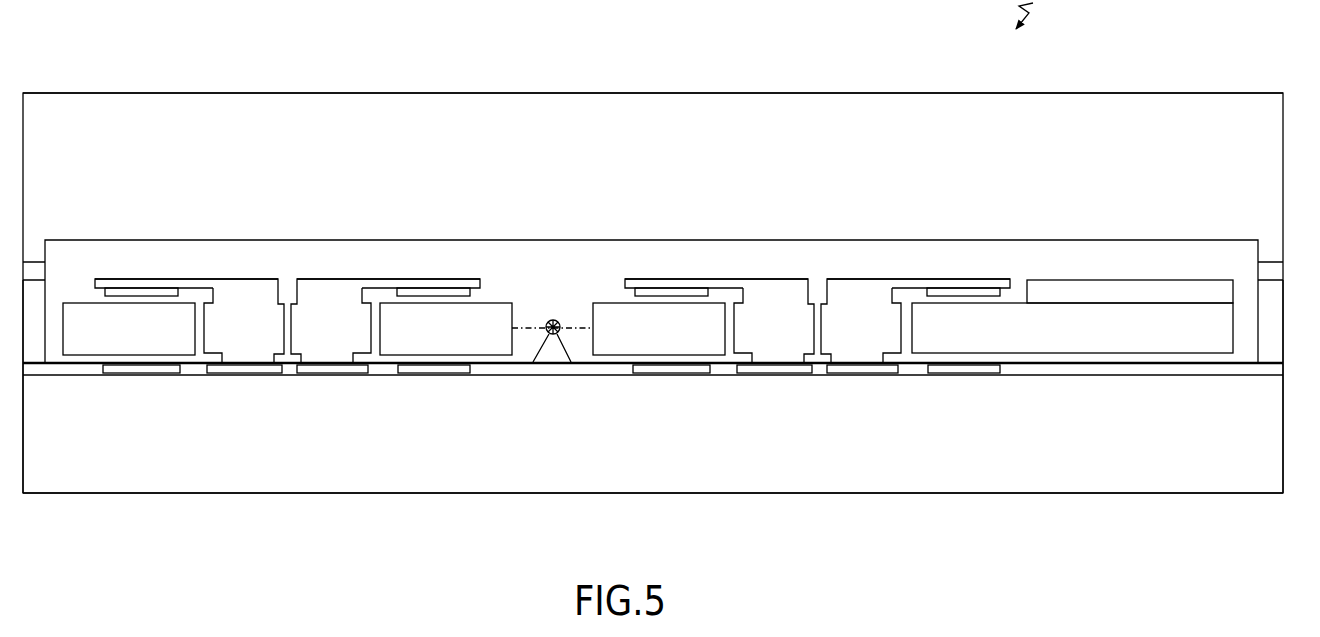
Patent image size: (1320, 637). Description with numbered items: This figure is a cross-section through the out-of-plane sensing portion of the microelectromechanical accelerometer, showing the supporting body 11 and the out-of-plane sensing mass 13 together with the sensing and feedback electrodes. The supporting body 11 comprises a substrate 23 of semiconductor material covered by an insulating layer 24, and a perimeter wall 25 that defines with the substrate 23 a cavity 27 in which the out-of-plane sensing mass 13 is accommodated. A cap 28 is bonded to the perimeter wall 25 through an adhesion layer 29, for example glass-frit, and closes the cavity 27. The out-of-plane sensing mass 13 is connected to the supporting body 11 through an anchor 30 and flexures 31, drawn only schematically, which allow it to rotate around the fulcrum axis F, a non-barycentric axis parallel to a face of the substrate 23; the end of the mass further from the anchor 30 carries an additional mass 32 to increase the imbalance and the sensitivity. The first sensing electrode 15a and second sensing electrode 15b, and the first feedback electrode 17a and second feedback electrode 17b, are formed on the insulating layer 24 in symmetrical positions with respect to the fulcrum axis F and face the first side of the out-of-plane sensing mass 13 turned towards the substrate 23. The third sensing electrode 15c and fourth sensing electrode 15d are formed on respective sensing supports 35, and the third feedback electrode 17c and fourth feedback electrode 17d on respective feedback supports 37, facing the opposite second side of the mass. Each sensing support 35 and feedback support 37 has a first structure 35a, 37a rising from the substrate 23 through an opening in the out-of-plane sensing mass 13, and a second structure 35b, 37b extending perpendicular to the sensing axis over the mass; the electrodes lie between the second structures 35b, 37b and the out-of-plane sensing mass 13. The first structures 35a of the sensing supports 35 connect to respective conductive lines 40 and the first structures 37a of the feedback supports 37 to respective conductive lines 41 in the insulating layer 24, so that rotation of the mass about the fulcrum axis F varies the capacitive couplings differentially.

The supporting body 11 is at (1040, 521).
The out-of-plane sensing mass 13 is at (1100, 338).
The first sensing electrode 15a is at (153, 368).
The second sensing electrode 15b is at (968, 376).
The third sensing electrode 15c is at (131, 290).
The fourth sensing electrode 15d is at (973, 292).
The first feedback electrode 17a is at (428, 373).
The second feedback electrode 17b is at (678, 373).
The third feedback electrode 17c is at (437, 293).
The fourth feedback electrode 17d is at (668, 288).
The substrate 23 is at (470, 465).
The insulating layer 24 is at (1142, 368).
The perimeter wall 25 is at (36, 348).
The cavity 27 is at (1066, 254).
The cap 28 is at (1203, 136).
The adhesion layer 29 is at (35, 267).
The anchor 30 is at (553, 373).
The flexures 31 is at (528, 322).
The additional mass 32 is at (1143, 288).
The sensing support 35 is at (245, 268).
The first structure of sensing support 35a is at (248, 338).
The second structure of sensing support 35b is at (217, 280).
The feedback support 37 is at (312, 268).
The first structure of feedback support 37a is at (320, 370).
The second structure of feedback support 37b is at (371, 278).
The conductive lines 40 is at (262, 369).
The conductive lines 41 is at (325, 346).
The fulcrum axis F is at (557, 320).